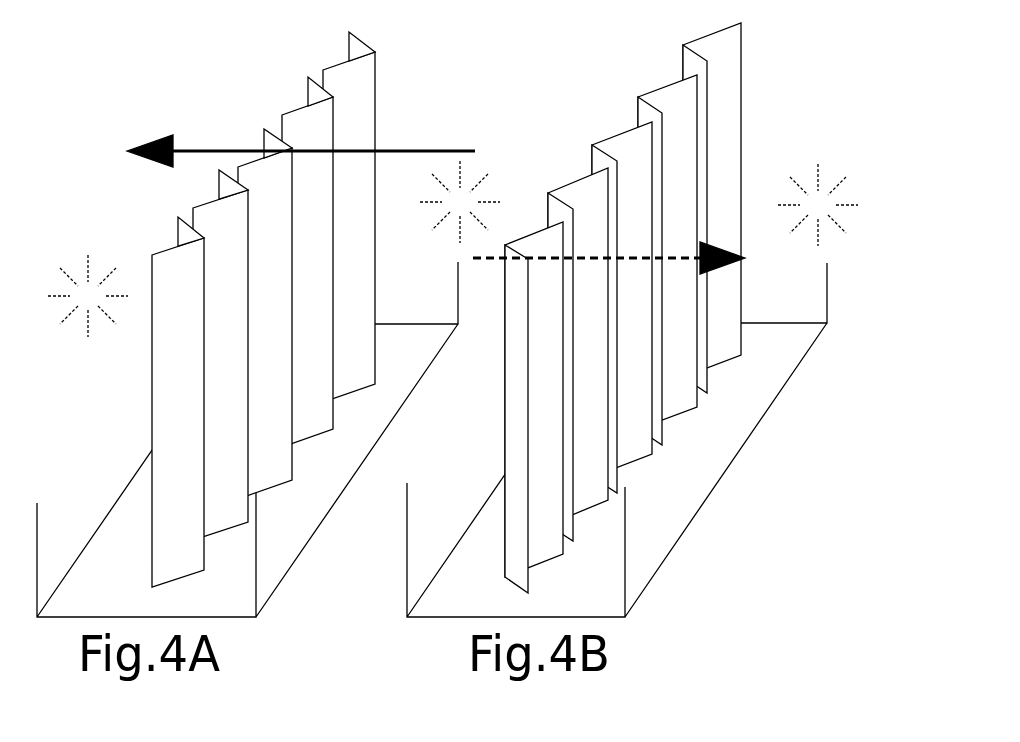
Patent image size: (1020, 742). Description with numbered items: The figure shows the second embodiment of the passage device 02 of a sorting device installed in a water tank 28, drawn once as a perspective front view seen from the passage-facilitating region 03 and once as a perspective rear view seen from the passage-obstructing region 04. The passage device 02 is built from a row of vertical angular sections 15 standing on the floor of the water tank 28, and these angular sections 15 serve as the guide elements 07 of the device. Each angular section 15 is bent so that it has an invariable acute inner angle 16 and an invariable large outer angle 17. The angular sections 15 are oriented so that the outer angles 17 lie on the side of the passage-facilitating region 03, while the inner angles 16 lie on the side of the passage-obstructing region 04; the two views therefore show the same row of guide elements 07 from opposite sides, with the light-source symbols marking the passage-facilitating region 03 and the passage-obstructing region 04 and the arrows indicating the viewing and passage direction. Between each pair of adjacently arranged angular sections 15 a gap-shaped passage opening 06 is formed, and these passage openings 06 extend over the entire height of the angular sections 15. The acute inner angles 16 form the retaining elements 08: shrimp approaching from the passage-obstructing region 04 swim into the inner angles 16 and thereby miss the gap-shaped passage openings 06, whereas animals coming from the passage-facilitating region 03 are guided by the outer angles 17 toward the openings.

In FIG. 4A, the passage device 02 is at (259, 299).
In FIG. 4B, the passage device 02 is at (676, 303).
In FIG. 4A, the passage-facilitating region 03 is at (460, 202).
In FIG. 4A, the passage-obstructing region 04 is at (88, 296).
In FIG. 4B, the passage-obstructing region 04 is at (818, 205).
In FIG. 4A, the passage opening 06 is at (176, 211).
In FIG. 4B, the passage opening 06 is at (580, 160).
In FIG. 4A, the guide element 07 is at (321, 58).
In FIG. 4B, the guide element 07 is at (713, 229).
In FIG. 4B, the retaining element 08 is at (675, 142).
In FIG. 4A, the angular section 15 is at (340, 63).
In FIG. 4B, the angular section 15 is at (669, 83).
In FIG. 4B, the inner angle 16 is at (730, 229).
In FIG. 4A, the outer angle 17 is at (354, 229).
In FIG. 4A, the water tank 28 is at (292, 565).
In FIG. 4B, the water tank 28 is at (663, 562).